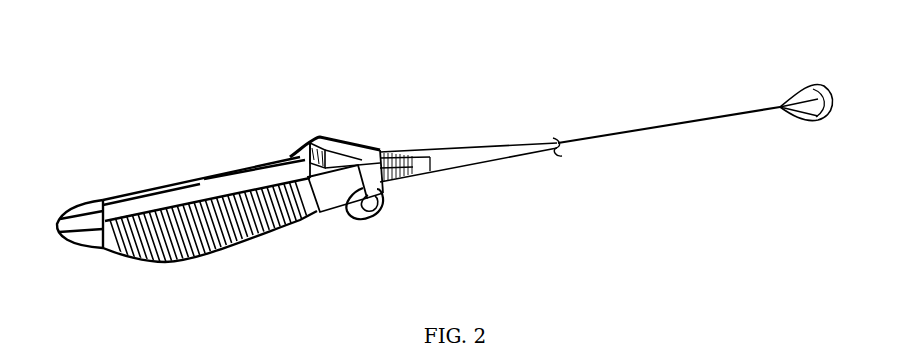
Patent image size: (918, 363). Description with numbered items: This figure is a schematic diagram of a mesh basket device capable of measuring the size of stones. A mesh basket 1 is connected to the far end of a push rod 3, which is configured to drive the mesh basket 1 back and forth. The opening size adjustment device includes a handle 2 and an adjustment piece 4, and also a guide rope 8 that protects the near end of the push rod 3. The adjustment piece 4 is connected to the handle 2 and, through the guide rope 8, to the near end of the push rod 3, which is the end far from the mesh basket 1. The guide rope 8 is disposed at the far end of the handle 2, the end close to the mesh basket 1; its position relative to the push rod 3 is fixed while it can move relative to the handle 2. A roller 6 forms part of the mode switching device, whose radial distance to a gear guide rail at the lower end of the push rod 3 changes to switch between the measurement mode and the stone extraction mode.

The mesh basket 1 is at (830, 88).
The handle 2 is at (128, 194).
The push rod 3 is at (651, 123).
The adjustment piece 4 is at (307, 147).
The roller 6 is at (377, 220).
The guide rope 8 is at (461, 151).